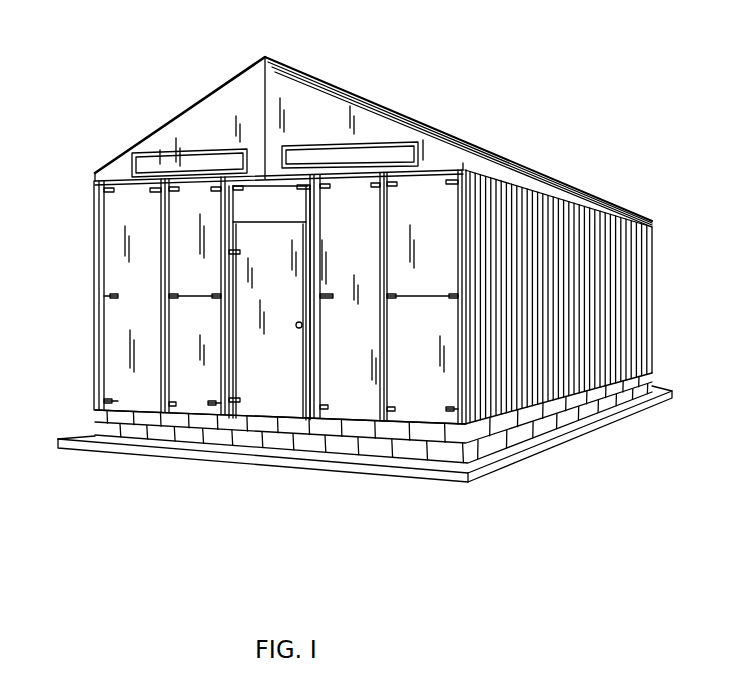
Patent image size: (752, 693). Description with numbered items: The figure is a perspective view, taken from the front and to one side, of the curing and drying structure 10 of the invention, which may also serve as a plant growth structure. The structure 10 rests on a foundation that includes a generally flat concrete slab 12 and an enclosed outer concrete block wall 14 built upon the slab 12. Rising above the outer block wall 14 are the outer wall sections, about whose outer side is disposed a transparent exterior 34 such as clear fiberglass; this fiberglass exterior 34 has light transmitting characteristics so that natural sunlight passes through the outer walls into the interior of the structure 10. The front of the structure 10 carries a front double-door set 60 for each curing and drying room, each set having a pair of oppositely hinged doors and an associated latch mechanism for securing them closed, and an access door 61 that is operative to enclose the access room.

The curing and drying structure 10 is at (131, 496).
The concrete slab 12 is at (592, 428).
The outer concrete block wall 14 is at (507, 440).
The transparent exterior 34 is at (478, 145).
The front double-door set 60 is at (115, 354).
The access door 61 is at (263, 397).